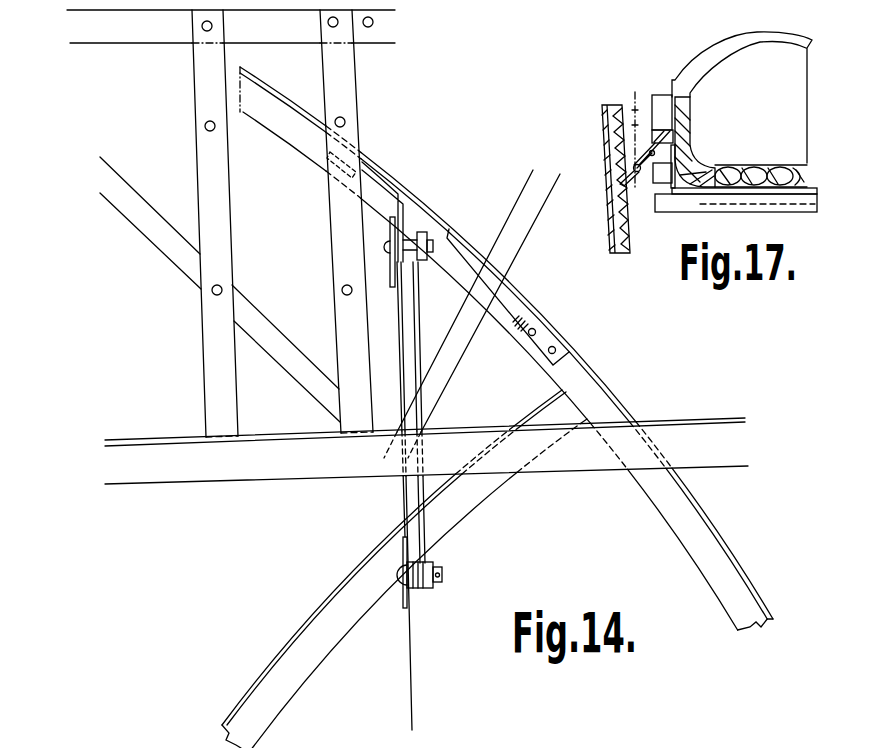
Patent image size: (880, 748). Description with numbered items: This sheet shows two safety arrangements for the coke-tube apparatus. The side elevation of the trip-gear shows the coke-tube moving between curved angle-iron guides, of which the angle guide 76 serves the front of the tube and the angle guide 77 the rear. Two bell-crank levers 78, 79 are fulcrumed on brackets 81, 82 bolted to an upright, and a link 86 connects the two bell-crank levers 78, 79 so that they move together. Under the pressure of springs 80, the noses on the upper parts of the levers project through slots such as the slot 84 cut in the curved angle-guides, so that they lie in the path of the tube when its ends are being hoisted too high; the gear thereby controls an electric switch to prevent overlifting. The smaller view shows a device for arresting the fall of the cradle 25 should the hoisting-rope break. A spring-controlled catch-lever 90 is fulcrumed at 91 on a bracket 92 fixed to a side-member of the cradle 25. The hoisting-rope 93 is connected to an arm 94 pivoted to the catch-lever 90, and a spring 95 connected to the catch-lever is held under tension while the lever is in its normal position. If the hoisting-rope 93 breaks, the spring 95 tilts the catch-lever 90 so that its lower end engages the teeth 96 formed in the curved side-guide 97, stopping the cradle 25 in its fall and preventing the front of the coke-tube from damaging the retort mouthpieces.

In FIG. 17, the cradle 25 is at (668, 193).
In FIG. 14, the angle guide 76 is at (722, 560).
In FIG. 14, the angle guide 77 is at (333, 622).
In FIG. 14, the bell-crank lever 78 is at (413, 240).
In FIG. 14, the bell-crank lever 79 is at (438, 527).
In FIG. 14, the spring 80 is at (502, 302).
In FIG. 14, the bracket 81 is at (390, 233).
In FIG. 14, the bracket 82 is at (405, 598).
In FIG. 14, the slot 84 is at (378, 182).
In FIG. 14, the link 86 is at (423, 358).
In FIG. 17, the catch-lever 90 is at (623, 190).
In FIG. 17, the fulcrum 91 is at (633, 166).
In FIG. 17, the bracket 92 is at (675, 167).
In FIG. 17, the hoisting-rope 93 is at (637, 95).
In FIG. 17, the arm 94 is at (653, 140).
In FIG. 17, the spring 95 is at (660, 162).
In FIG. 17, the teeth 96 is at (627, 237).
In FIG. 17, the curved side-guide 97 is at (610, 230).